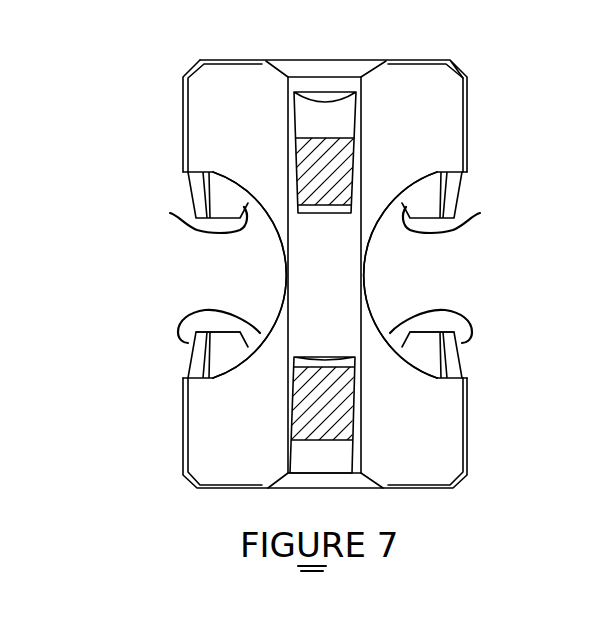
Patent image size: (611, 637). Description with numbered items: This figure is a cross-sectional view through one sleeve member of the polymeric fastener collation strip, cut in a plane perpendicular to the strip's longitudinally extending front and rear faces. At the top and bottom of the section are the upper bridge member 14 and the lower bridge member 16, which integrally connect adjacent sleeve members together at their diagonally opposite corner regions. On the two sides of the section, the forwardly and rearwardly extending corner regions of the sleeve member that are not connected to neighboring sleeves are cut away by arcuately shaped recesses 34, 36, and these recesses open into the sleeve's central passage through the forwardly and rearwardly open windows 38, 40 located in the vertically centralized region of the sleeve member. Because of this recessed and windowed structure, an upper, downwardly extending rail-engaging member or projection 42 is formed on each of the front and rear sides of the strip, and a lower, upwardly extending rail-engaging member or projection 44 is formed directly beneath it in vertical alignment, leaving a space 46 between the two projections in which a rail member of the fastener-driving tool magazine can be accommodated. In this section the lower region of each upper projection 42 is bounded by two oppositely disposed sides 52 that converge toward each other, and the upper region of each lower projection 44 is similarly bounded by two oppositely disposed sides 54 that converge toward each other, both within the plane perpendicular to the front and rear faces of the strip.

The upper bridge member 14 is at (342, 160).
The lower bridge member 16 is at (338, 407).
The arcuately shaped recess 34 is at (378, 310).
The arcuately shaped recess 36 is at (281, 290).
The forwardly open window 38 is at (437, 248).
The rearwardly open window 40 is at (208, 242).
The upper, downwardly extending rail-engaging member or projection 42 is at (220, 193).
The lower, upwardly extending rail-engaging member or projection 44 is at (217, 350).
The space 46 is at (213, 297).
The oppositely disposed sides 52 is at (178, 212).
The oppositely disposed sides 54 is at (395, 328).